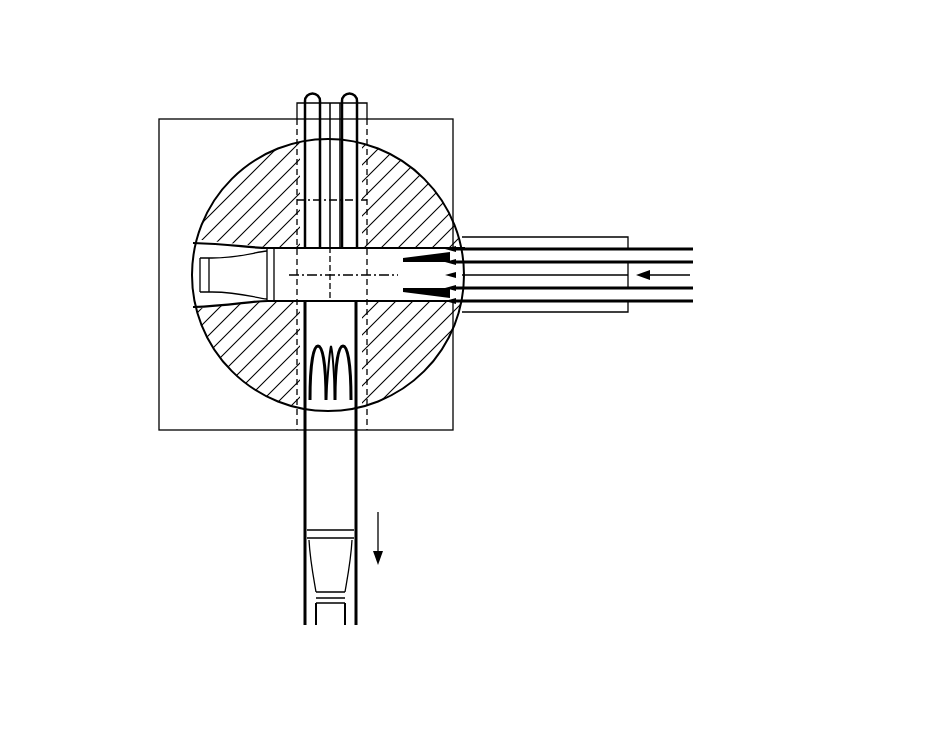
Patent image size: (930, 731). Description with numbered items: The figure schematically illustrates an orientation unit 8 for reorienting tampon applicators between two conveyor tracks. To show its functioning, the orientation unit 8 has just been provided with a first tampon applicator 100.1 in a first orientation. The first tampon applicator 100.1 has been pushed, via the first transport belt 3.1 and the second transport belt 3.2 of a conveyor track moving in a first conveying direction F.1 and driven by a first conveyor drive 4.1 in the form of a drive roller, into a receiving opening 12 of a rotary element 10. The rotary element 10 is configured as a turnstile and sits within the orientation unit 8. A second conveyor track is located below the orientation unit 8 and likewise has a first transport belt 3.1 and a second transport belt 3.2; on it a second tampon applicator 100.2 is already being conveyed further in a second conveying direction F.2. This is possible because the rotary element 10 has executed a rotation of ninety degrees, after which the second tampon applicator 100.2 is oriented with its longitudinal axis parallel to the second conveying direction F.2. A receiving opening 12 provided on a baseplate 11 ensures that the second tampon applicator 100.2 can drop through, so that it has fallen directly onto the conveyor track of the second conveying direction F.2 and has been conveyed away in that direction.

The orientation unit 8 is at (510, 176).
The rotary element 10 is at (384, 172).
The baseplate 11 is at (180, 390).
The receiving opening 12 is at (306, 190).
The first transport belt 3.1 is at (650, 246).
The second transport belt 3.2 is at (655, 304).
The first conveyor drive 4.1 is at (300, 107).
The first tampon applicator 100.1 is at (392, 266).
The second tampon applicator 100.2 is at (337, 465).
The first conveying direction F.1 is at (682, 272).
The second conveying direction F.2 is at (380, 534).